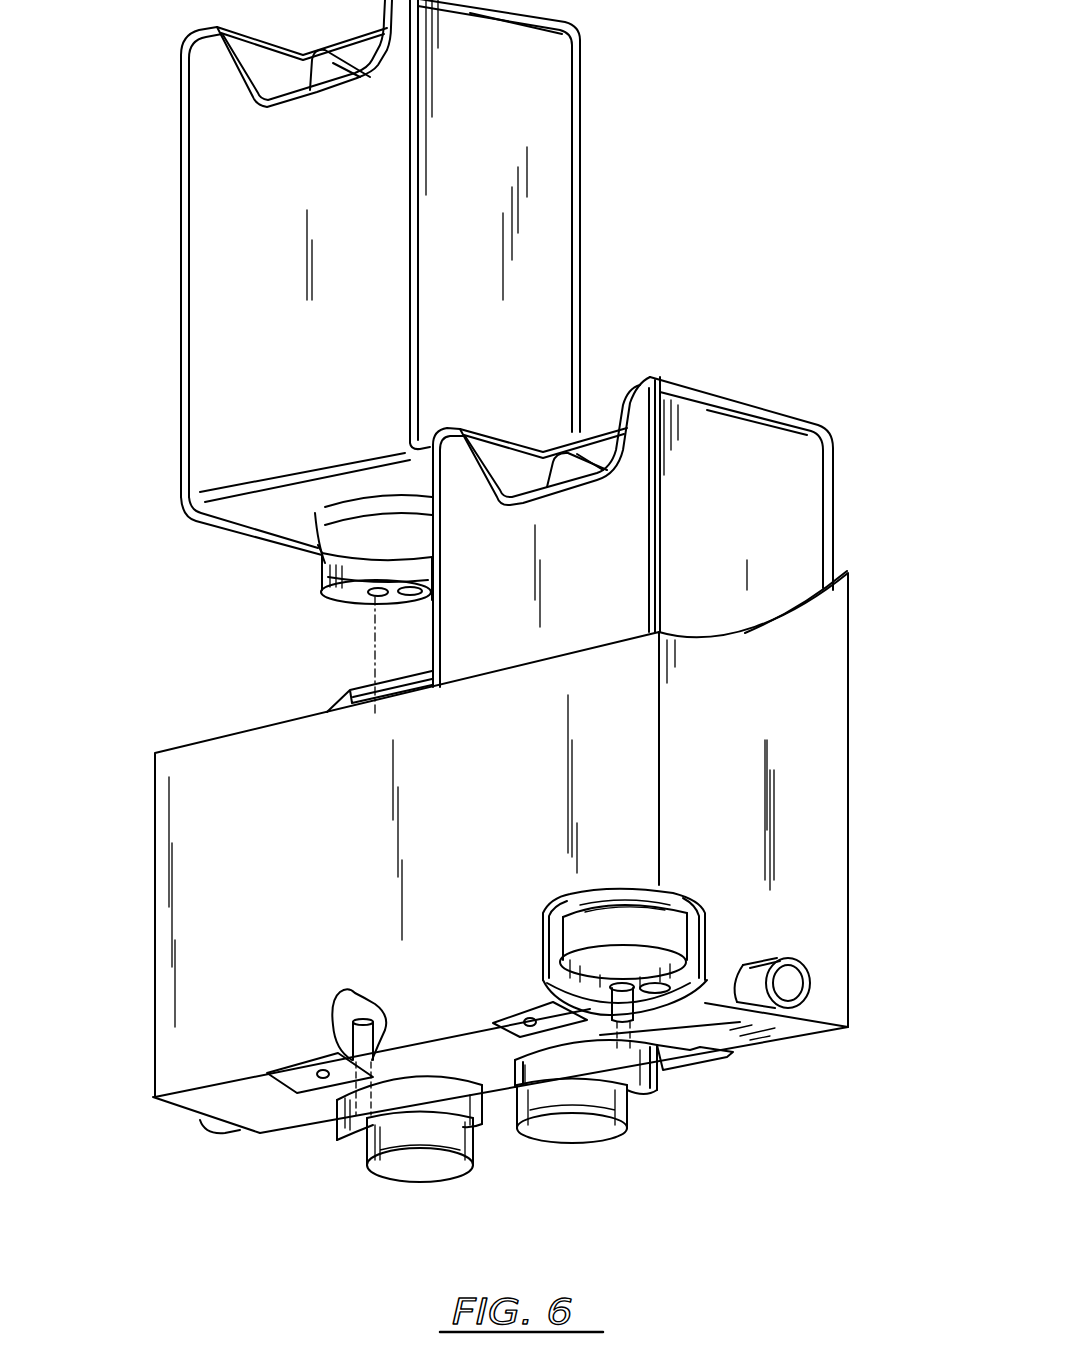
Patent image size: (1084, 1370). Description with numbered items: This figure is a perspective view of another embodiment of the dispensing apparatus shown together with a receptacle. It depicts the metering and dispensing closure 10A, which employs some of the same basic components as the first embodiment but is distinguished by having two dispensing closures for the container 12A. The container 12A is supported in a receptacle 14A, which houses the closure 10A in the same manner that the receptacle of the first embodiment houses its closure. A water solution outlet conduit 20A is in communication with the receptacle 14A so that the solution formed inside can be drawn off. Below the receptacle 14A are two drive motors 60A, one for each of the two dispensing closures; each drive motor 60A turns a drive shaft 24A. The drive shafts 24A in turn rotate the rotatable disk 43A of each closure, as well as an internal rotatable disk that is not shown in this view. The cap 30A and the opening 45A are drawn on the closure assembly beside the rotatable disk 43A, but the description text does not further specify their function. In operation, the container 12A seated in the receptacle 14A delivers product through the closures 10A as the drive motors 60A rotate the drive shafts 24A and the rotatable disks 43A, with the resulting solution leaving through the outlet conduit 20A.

The container 12A is at (575, 56).
The receptacle 14A is at (172, 806).
The metering and dispensing closure 10A is at (300, 571).
The cap 30A is at (318, 577).
The rotatable disk 43A is at (373, 595).
The vent opening 45A is at (410, 595).
The drive shaft 24A is at (352, 1030).
The water solution outlet conduit 20A is at (797, 960).
The drive motor 60A is at (383, 1167).